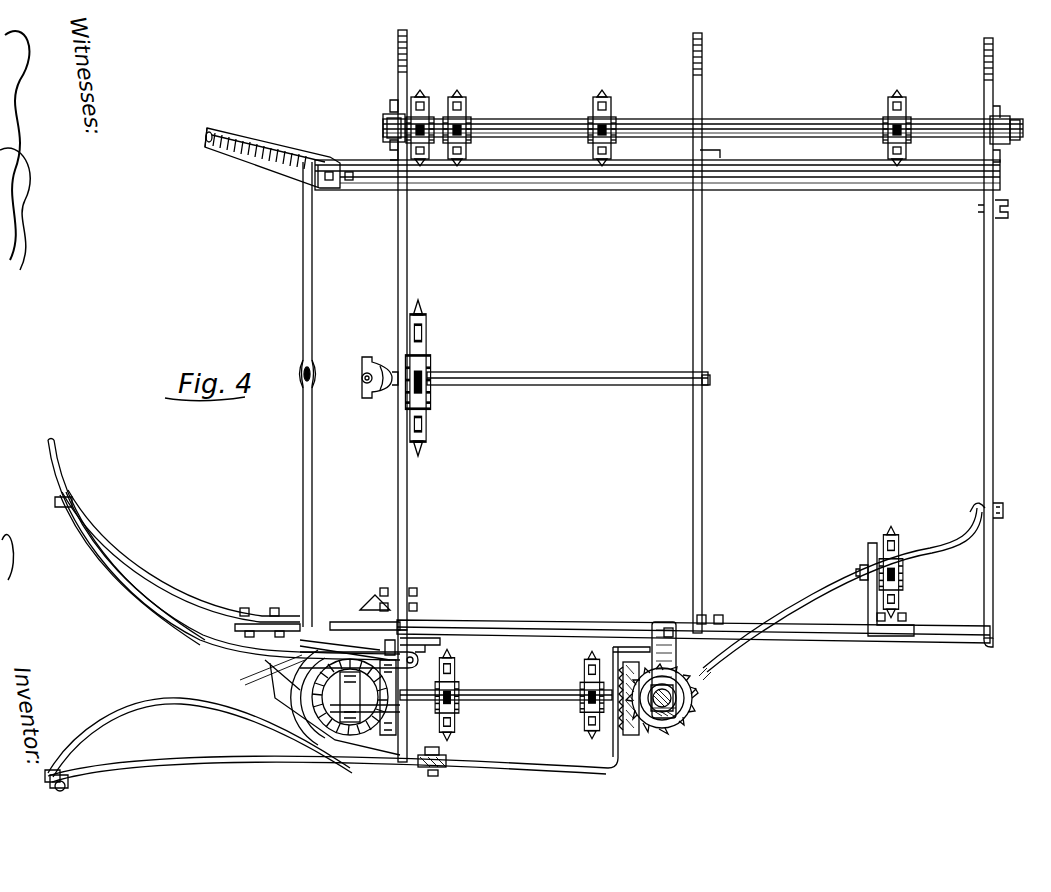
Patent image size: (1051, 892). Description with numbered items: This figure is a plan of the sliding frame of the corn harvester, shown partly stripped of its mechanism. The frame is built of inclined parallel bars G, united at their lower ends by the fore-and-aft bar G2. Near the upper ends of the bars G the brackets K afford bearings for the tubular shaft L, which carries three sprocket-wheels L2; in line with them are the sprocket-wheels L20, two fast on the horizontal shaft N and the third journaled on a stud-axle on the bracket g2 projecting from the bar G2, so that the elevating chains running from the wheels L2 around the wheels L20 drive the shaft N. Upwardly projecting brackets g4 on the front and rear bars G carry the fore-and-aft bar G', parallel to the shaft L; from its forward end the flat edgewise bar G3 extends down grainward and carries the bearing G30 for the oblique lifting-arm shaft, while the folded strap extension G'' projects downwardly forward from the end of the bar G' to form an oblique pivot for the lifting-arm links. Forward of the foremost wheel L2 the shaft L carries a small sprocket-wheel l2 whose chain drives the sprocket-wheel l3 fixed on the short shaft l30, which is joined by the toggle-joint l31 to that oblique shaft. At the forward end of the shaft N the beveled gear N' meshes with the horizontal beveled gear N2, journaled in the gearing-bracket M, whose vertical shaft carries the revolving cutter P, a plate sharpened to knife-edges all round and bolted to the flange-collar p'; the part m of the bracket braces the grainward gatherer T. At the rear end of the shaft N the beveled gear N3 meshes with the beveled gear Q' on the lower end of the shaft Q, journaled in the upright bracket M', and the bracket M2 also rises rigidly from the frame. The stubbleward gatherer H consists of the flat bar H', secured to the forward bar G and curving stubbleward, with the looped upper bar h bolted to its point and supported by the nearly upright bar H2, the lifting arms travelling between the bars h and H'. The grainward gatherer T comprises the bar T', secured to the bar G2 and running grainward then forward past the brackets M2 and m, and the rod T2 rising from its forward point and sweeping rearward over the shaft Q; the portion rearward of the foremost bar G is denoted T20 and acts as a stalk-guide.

The inclined parallel bars G is at (703, 396).
The fore-and-aft bar G' is at (657, 185).
The extension G'' is at (272, 173).
The fore-and-aft bar G2 is at (570, 618).
The flat bar G3 is at (310, 308).
The bearing G30 is at (310, 380).
The bracket g2 is at (872, 592).
The upwardly-projecting brackets g4 is at (397, 145).
The brackets K is at (383, 124).
The tubular shaft L is at (738, 124).
The sprocket-wheels L2 is at (472, 112).
The sprocket-wheels L20 is at (582, 715).
The small sprocket-wheel l2 is at (433, 103).
The sprocket-wheel l3 is at (427, 362).
The short horizontal shaft l30 is at (500, 376).
The toggle-joint l31 is at (368, 398).
The horizontal shaft N is at (506, 679).
The beveled gear N' is at (422, 703).
The horizontal beveled gear N2 is at (330, 712).
The beveled gear N3 is at (630, 738).
The gearing-bracket M is at (350, 733).
The upright bracket M' is at (677, 730).
The bracket M2 is at (448, 760).
The bracket part m is at (390, 740).
The cutter P is at (320, 702).
The shaft Q is at (679, 699).
The beveled gear Q' is at (686, 689).
The flange-collar p' is at (629, 715).
The stubbleward stalk-gatherer H is at (217, 550).
The flat iron bar H' is at (231, 563).
The nearly-upright bar H2 is at (305, 660).
The upper gatherer bar h is at (116, 585).
The grainward gatherer T is at (59, 755).
The gatherer bar T' is at (328, 789).
The rod or bar T2 is at (167, 703).
The stalk-guide portion T20 is at (787, 615).